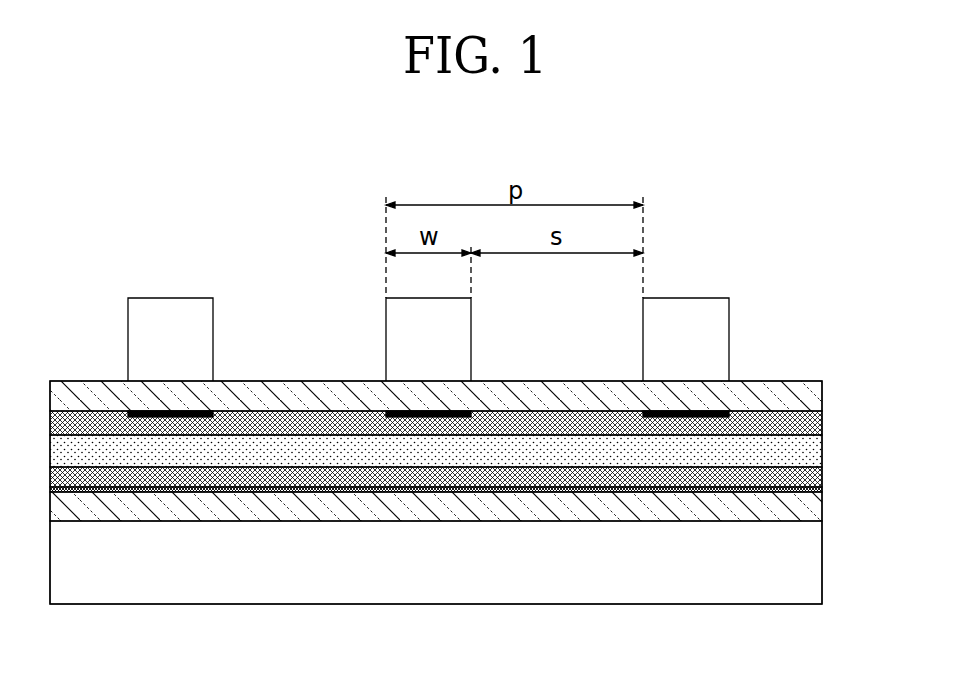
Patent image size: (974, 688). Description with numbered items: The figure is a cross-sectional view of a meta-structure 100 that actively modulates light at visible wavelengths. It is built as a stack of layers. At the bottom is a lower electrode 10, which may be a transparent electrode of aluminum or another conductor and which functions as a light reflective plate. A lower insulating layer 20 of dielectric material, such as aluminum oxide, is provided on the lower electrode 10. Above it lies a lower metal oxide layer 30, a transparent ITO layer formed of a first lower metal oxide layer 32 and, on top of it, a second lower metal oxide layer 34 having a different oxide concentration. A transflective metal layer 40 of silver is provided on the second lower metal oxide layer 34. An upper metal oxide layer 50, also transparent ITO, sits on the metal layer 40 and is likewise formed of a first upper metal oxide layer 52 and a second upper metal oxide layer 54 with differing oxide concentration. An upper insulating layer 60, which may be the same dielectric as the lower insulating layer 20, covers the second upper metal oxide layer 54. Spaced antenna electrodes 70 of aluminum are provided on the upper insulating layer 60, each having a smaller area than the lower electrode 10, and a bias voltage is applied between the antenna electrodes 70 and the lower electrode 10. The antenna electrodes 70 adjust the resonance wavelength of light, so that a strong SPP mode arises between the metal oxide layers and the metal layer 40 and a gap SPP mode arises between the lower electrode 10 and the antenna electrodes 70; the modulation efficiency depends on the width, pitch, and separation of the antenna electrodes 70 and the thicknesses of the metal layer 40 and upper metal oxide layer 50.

The meta-structure 100 is at (767, 187).
The lower electrode 10 is at (813, 558).
The lower insulating layer 20 is at (813, 506).
The lower metal oxide layer 30 is at (500, 492).
The first lower metal oxide layer 32 is at (822, 490).
The second lower metal oxide layer 34 is at (813, 476).
The metal layer 40 is at (813, 450).
The upper metal oxide layer 50 is at (500, 416).
The first upper metal oxide layer 52 is at (822, 413).
The second upper metal oxide layer 54 is at (720, 413).
The upper insulating layer 60 is at (813, 391).
The antenna electrodes 70 is at (687, 317).